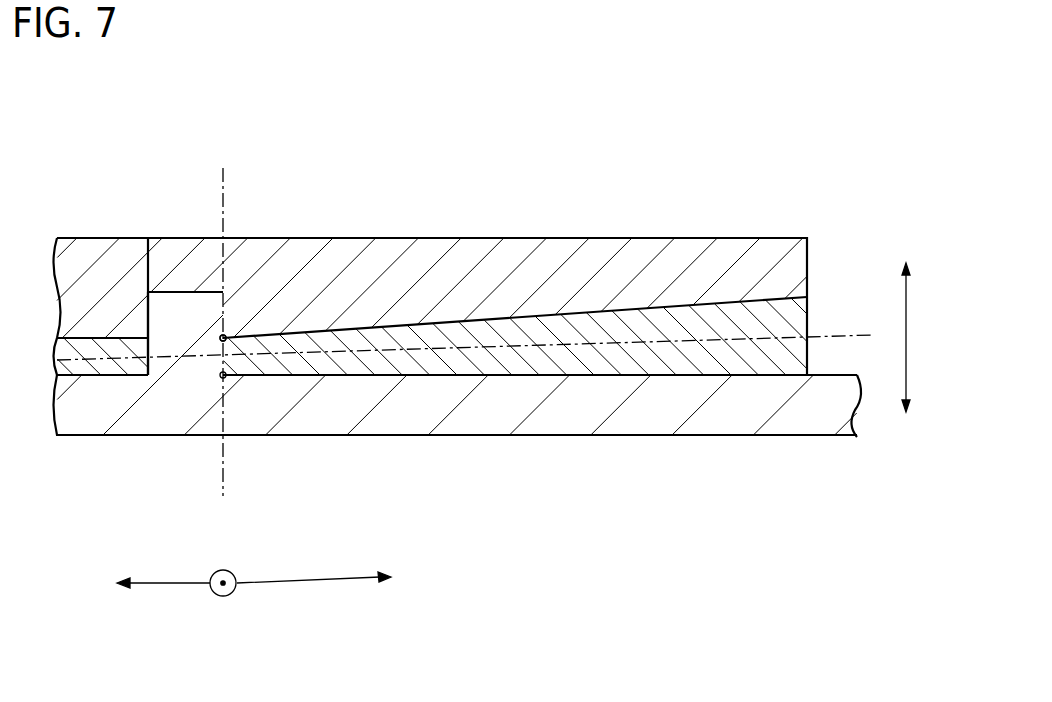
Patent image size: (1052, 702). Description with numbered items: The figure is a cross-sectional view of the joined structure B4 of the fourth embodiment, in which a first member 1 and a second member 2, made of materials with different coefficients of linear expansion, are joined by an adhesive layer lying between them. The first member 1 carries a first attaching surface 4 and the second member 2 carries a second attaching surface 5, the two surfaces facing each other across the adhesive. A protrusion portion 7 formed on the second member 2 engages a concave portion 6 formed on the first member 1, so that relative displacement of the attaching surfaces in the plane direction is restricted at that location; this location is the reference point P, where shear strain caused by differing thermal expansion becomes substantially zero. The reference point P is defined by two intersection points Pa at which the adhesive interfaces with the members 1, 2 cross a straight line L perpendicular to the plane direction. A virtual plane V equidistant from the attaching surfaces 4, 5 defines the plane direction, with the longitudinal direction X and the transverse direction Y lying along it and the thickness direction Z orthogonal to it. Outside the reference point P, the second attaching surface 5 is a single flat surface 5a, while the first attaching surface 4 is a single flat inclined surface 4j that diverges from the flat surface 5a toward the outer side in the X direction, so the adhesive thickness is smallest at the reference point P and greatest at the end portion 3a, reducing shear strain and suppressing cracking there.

The joined structure B4 is at (82, 161).
The first member 1 is at (89, 238).
The second member 2 is at (92, 435).
The end portion 3a is at (808, 357).
The first attaching surface 4 is at (675, 310).
The inclined surface 4j is at (575, 317).
The second attaching surface 5 is at (710, 375).
The flat surface 5a is at (622, 375).
The concave portion 6 is at (211, 238).
The protrusion portion 7 is at (151, 238).
The reference point P is at (226, 337).
The intersection points Pa is at (221, 375).
The straight line L is at (224, 205).
The virtual plane V is at (840, 333).
The longitudinal direction X is at (264, 582).
The transverse direction Y is at (223, 602).
The thickness direction Z is at (916, 337).